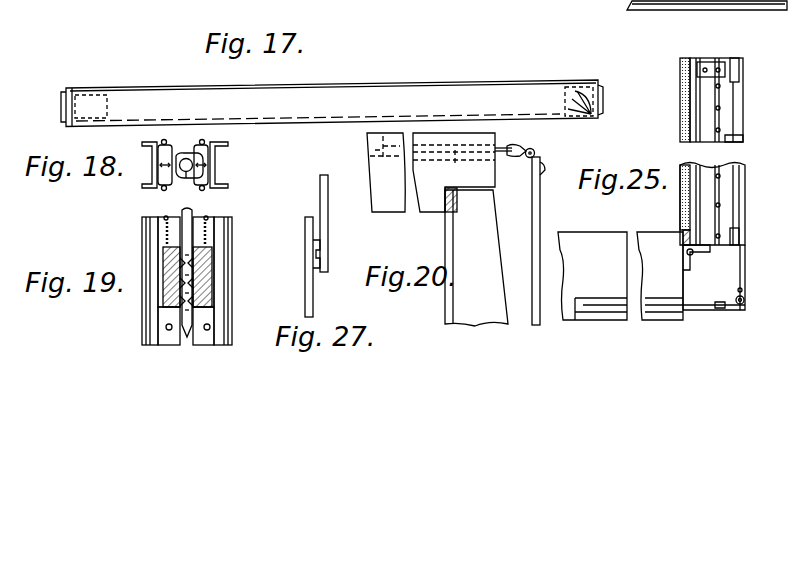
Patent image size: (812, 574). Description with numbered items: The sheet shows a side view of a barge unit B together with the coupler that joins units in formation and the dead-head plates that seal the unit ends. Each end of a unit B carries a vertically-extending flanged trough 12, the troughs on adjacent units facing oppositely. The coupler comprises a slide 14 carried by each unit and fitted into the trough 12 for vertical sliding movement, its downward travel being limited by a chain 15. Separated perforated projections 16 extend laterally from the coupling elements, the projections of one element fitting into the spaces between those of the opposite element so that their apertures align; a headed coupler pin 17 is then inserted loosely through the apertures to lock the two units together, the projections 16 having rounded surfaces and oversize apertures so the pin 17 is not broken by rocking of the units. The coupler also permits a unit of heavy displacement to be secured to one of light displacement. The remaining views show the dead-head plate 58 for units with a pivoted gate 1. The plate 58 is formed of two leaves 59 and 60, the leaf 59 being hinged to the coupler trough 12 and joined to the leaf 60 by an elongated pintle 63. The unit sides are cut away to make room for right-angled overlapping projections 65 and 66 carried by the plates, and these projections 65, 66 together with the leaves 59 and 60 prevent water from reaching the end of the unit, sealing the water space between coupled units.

In FIG. 17, the unit B is at (374, 90).
In FIG. 17, the dead-head plate 58 is at (64, 100).
In FIG. 18, the flanged trough 12 is at (204, 160).
In FIG. 18, the slide 14 is at (200, 178).
In FIG. 19, the slide 14 is at (212, 245).
In FIG. 19, the chain 15 is at (217, 215).
In FIG. 19, the perforated projection 16 is at (165, 258).
In FIG. 18, the coupler pin 17 is at (186, 178).
In FIG. 19, the coupler pin 17 is at (190, 306).
In FIG. 20, the gate 1 is at (488, 232).
In FIG. 20, the leaf 59 is at (547, 208).
In FIG. 25, the leaf 59 is at (740, 108).
In FIG. 25, the leaf 60 is at (705, 312).
In FIG. 25, the pintle 63 is at (728, 323).
In FIG. 27, the overlapping projection 65 is at (329, 216).
In FIG. 20, the overlapping projection 65 is at (510, 145).
In FIG. 27, the overlapping projection 66 is at (305, 266).
In FIG. 20, the overlapping projection 66 is at (431, 172).